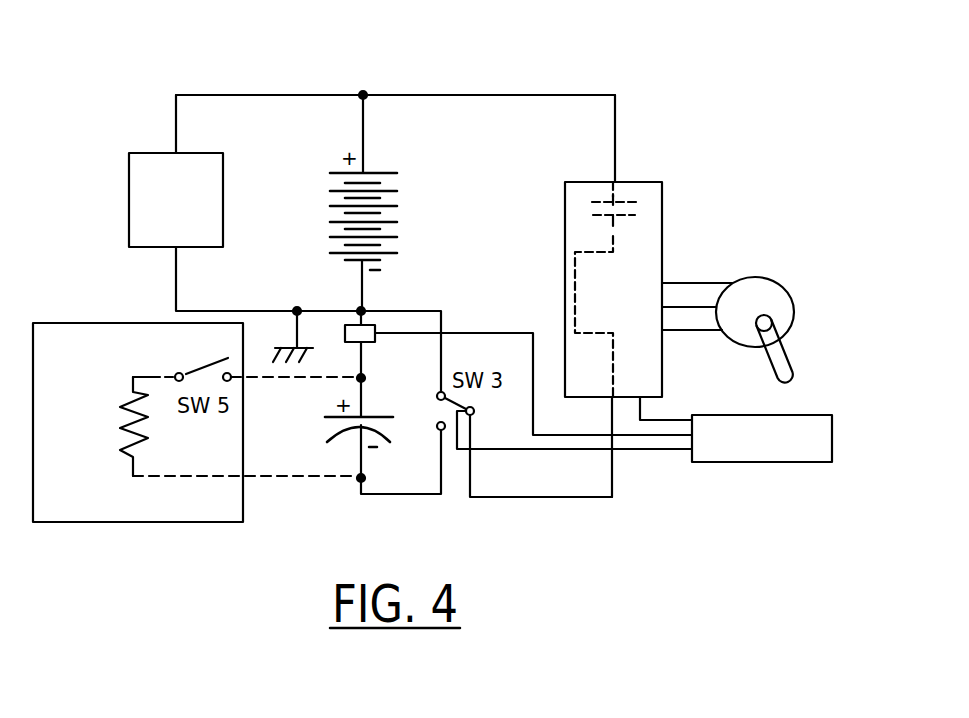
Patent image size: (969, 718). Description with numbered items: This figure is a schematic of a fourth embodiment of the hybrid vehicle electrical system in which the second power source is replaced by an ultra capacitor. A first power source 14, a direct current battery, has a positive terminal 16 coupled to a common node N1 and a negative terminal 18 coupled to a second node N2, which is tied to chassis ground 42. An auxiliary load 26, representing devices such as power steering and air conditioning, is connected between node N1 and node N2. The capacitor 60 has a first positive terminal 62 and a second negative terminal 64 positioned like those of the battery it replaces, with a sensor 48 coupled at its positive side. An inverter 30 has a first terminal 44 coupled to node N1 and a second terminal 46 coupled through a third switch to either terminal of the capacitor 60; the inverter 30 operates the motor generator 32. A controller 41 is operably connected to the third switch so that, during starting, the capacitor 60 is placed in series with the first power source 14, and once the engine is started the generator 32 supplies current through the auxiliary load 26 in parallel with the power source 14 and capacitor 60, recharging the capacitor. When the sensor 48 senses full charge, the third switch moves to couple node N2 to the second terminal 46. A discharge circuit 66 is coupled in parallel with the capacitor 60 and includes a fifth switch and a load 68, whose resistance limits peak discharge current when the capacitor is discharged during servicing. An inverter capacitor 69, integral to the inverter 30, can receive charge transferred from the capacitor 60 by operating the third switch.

The common node N1 is at (363, 94).
The second node N2 is at (357, 308).
The auxiliary load 26 is at (145, 152).
The positive terminal 16 is at (367, 140).
The first power source 14 is at (388, 202).
The negative terminal 18 is at (365, 287).
The chassis ground 42 is at (296, 336).
The sensor 48 is at (375, 323).
The first positive terminal 62 is at (363, 395).
The capacitor 60 is at (337, 425).
The second negative terminal 64 is at (362, 463).
The discharge circuit 66 is at (268, 507).
The load 68 is at (120, 428).
The first terminal 44 is at (615, 143).
The inverter 30 is at (662, 193).
The inverter capacitor 69 is at (597, 198).
The motor generator 32 is at (794, 311).
The second terminal 46 is at (612, 473).
The controller 41 is at (760, 462).